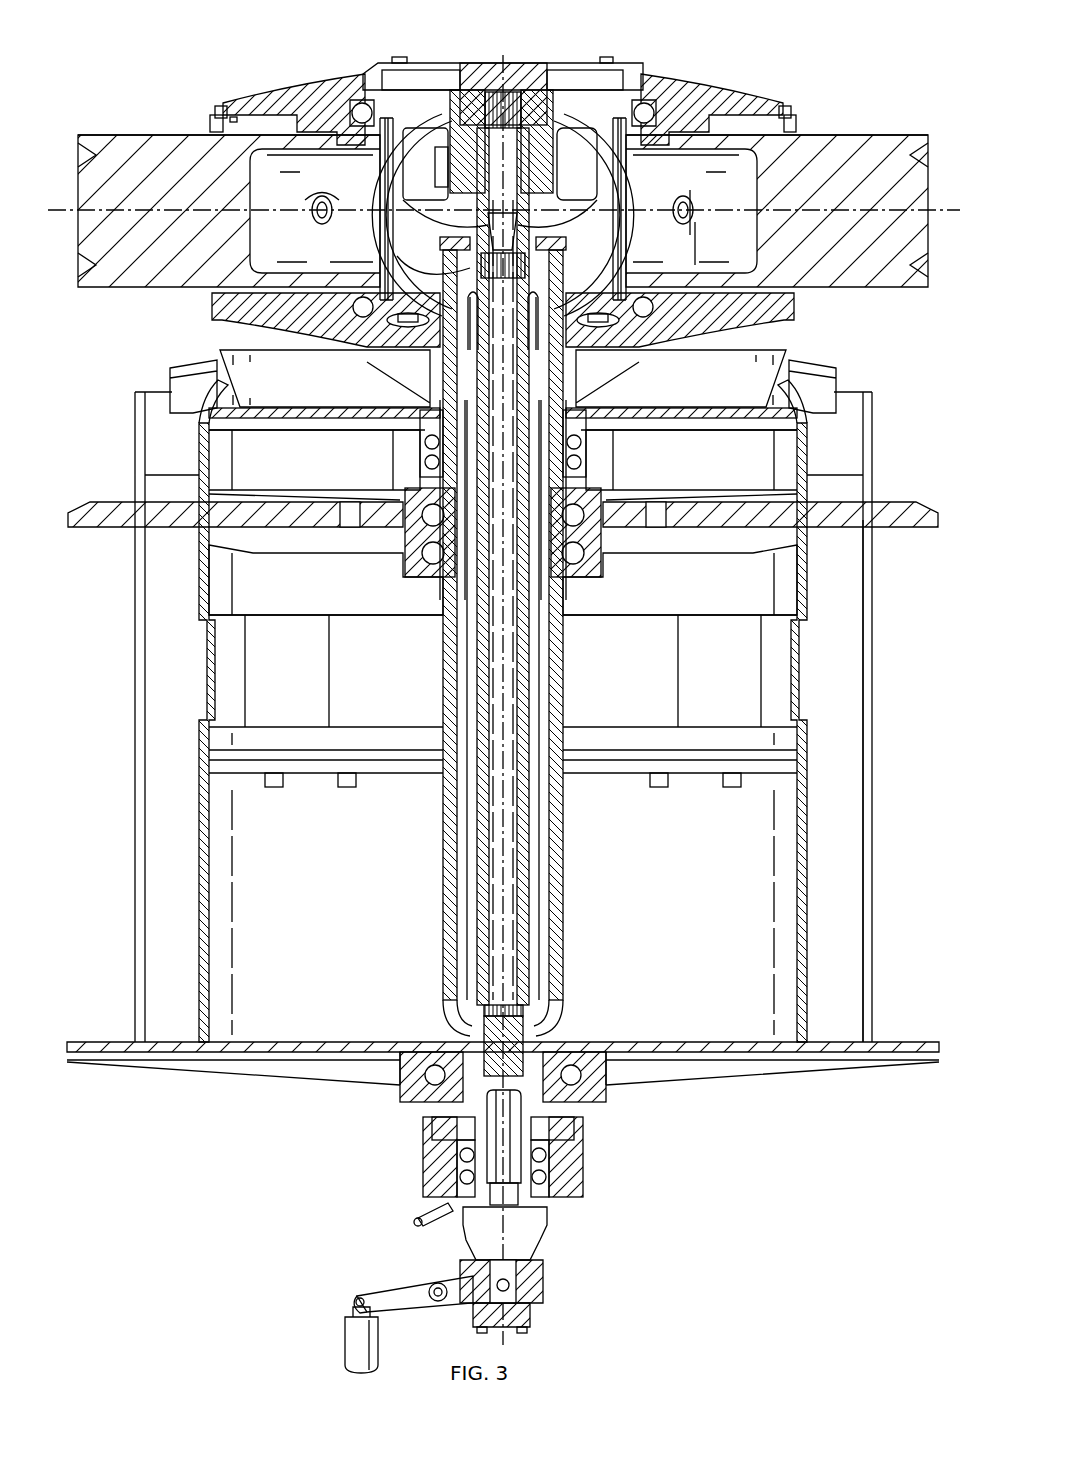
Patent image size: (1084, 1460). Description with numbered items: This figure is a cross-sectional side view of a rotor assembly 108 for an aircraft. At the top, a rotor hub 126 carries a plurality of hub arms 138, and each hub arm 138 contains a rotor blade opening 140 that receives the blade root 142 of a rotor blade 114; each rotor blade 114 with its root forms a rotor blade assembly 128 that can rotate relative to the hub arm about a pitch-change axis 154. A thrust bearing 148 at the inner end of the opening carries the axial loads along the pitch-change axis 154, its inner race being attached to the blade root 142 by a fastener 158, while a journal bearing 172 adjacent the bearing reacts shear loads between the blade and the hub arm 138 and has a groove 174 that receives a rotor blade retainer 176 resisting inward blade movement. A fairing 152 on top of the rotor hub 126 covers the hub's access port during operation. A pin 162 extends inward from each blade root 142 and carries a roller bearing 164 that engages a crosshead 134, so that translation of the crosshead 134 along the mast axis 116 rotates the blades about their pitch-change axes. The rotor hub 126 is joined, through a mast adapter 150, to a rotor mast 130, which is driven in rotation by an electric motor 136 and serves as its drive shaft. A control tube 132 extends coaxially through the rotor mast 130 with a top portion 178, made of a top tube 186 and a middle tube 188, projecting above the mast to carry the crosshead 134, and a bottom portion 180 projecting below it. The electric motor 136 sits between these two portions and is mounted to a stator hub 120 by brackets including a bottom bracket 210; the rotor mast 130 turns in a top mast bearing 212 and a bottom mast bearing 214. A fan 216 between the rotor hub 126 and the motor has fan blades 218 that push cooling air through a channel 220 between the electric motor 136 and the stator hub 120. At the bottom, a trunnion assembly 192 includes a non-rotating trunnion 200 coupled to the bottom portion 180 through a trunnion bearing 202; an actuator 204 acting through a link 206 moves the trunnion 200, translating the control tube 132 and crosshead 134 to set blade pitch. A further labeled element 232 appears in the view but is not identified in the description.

The rotor assembly 108 is at (92, 64).
The rotor blade 114 is at (128, 280).
The mast axis 116 is at (507, 962).
The stator hub 120 is at (875, 443).
The rotor hub 126 is at (341, 77).
The rotor blade assembly 128 is at (131, 132).
The rotor mast 130 is at (448, 900).
The control tube 132 is at (532, 898).
The crosshead 134 is at (577, 120).
The electric motor 136 is at (804, 897).
The hub arm 138 is at (273, 103).
The rotor blade opening 140 is at (317, 335).
The blade root 142 is at (705, 333).
The thrust bearing 148 is at (665, 93).
The mast adapter 150 is at (577, 395).
The fairing 152 is at (583, 63).
The pitch-change axis 154 is at (193, 207).
The fastener 158 is at (697, 233).
The pin 162 is at (388, 170).
The roller bearing 164 is at (427, 157).
The journal bearing 172 is at (753, 113).
The groove 174 is at (213, 116).
The rotor blade retainer 176 is at (222, 107).
The top portion 178 is at (608, 248).
The bottom portion 180 is at (532, 1105).
The top tube 186 is at (606, 170).
The middle tube 188 is at (528, 818).
The trunnion assembly 192 is at (564, 1213).
The trunnion 200 is at (425, 1173).
The trunnion bearing 202 is at (560, 1165).
The actuator 204 is at (342, 1343).
The link 206 is at (397, 1283).
The bottom bracket 210 is at (107, 530).
The top mast bearing 212 is at (585, 577).
The bottom mast bearing 214 is at (410, 1100).
The fan 216 is at (172, 385).
The fan blades 218 is at (837, 373).
The channel 220 is at (847, 839).
The brake ring 232 is at (397, 256).